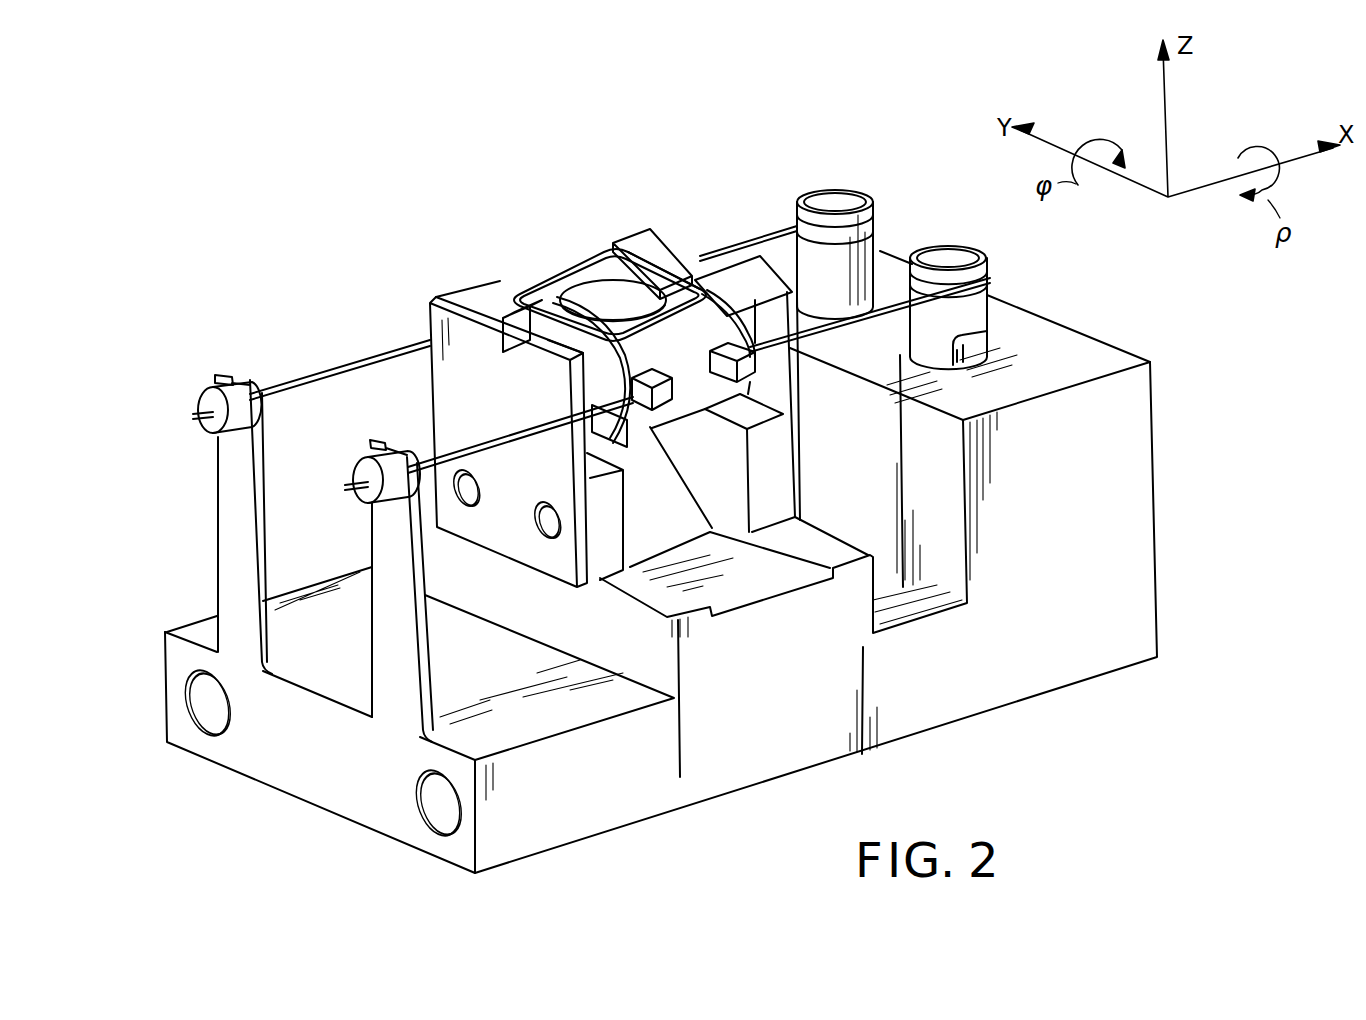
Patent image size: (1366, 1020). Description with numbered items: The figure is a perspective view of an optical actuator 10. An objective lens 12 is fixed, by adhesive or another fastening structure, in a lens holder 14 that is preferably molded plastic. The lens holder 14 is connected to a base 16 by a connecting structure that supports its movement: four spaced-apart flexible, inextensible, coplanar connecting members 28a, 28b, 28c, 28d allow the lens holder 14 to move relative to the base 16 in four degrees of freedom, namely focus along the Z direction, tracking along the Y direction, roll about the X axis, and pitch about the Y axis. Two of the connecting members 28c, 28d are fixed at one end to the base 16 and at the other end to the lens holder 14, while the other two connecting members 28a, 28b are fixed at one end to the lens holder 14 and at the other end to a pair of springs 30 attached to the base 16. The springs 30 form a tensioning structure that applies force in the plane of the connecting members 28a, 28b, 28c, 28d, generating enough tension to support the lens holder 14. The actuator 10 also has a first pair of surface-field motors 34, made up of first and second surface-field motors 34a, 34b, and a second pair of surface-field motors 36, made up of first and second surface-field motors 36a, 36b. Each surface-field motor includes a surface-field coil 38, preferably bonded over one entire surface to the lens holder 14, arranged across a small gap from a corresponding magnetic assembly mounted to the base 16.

The optical actuator 10 is at (800, 679).
The objective lens 12 is at (600, 282).
The lens holder 14 is at (702, 262).
The base 16 is at (955, 688).
The connecting member 28a is at (500, 437).
The connecting member 28b is at (331, 368).
The connecting member 28c is at (748, 233).
The connecting member 28d is at (864, 316).
The springs 30 is at (233, 488).
The first pair of surface-field motors 34 is at (407, 262).
The plate top bar 34a is at (465, 294).
The plate block 34b is at (552, 290).
The second pair of surface-field motors 36 is at (627, 212).
The frame corner block 36a is at (665, 247).
The frame side member 36b is at (772, 257).
The surface-field coil 38 is at (520, 298).